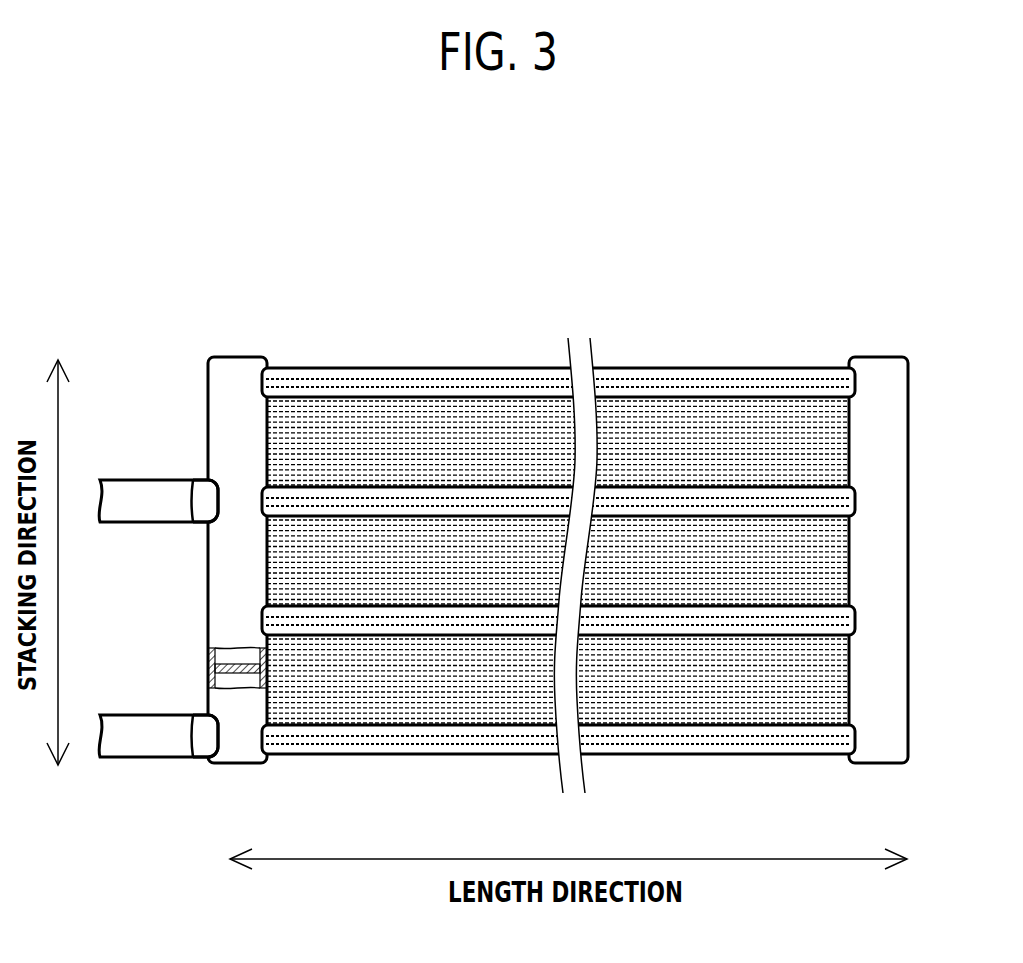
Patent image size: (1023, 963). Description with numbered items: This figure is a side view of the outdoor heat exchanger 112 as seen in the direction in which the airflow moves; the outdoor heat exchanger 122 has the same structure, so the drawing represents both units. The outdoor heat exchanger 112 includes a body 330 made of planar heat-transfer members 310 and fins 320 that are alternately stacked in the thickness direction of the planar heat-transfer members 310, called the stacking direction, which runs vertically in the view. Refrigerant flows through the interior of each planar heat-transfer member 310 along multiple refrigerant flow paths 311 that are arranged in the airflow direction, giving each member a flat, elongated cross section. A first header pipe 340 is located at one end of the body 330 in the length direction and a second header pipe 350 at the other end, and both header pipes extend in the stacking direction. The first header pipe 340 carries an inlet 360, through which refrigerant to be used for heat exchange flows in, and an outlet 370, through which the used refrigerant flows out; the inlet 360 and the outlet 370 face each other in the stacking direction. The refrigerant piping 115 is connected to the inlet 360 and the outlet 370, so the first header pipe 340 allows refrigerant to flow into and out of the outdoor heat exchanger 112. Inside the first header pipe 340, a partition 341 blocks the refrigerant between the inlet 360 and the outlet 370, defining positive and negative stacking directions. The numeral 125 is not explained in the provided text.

The outdoor heat exchanger 112 is at (578, 292).
The outdoor heat exchanger 122 is at (538, 529).
The refrigerant piping 115 is at (150, 661).
The pipe 125 is at (120, 775).
The planar heat-transfer member 310 is at (843, 394).
The refrigerant flow path 311 is at (681, 383).
The fin 320 is at (697, 459).
The body 330 is at (627, 545).
The first header pipe 340 is at (237, 365).
The partition 341 is at (222, 668).
The second header pipe 350 is at (878, 362).
The inlet 360 is at (203, 479).
The outlet 370 is at (203, 759).